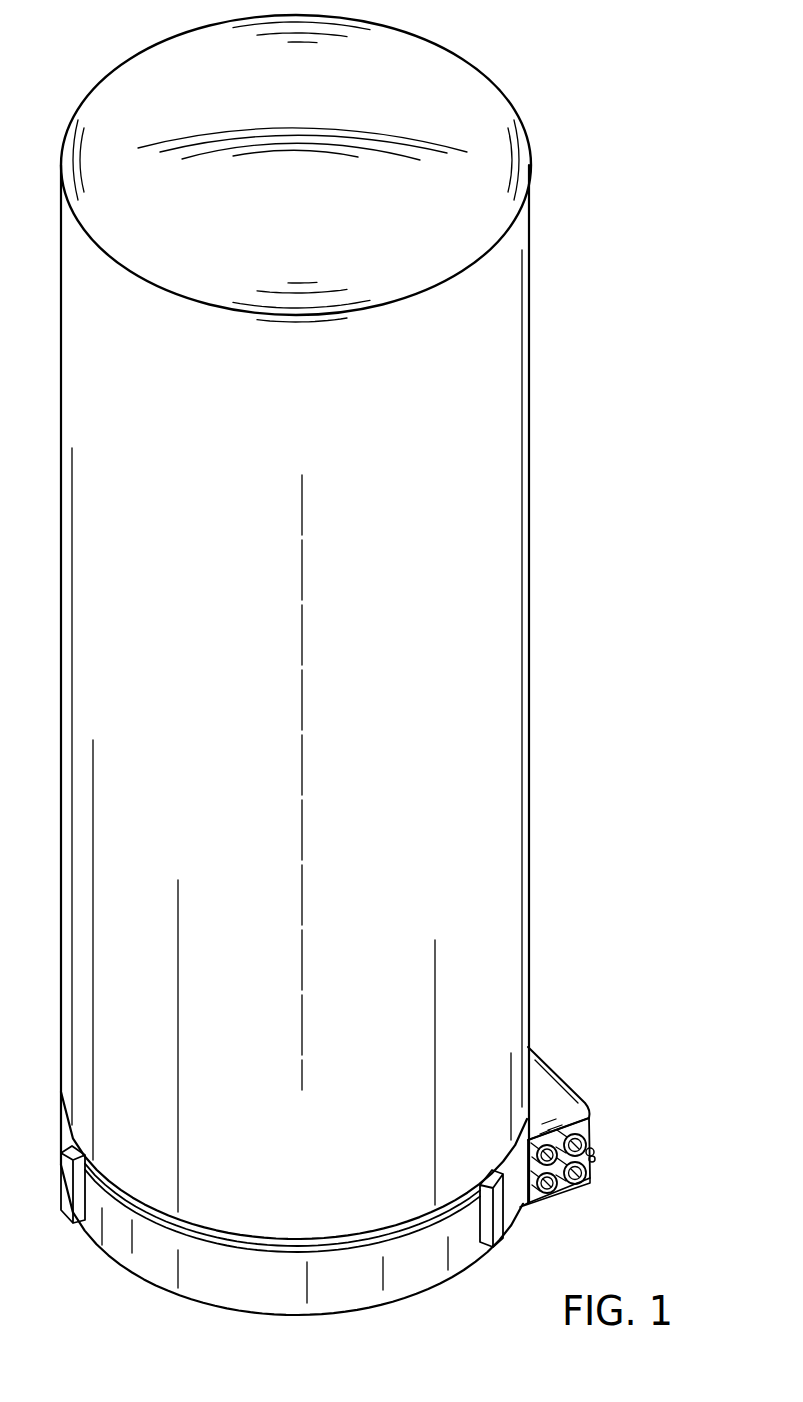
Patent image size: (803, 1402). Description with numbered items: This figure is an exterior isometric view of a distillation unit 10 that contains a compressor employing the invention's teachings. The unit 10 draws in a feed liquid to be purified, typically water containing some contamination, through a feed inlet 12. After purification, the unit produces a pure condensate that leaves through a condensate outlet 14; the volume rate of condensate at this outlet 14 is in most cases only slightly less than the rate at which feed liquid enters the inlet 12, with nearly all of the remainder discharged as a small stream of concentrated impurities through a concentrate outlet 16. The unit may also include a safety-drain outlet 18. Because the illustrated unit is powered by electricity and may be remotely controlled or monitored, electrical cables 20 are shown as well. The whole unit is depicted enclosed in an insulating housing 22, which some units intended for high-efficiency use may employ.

The distillation unit 10 is at (377, 665).
The feed inlet 12 is at (558, 1190).
The condensate outlet 14 is at (590, 1175).
The concentrate outlet 16 is at (589, 1135).
The safety-drain outlet 18 is at (560, 1110).
The electrical cables 20 is at (597, 1157).
The insulating housing 22 is at (521, 698).